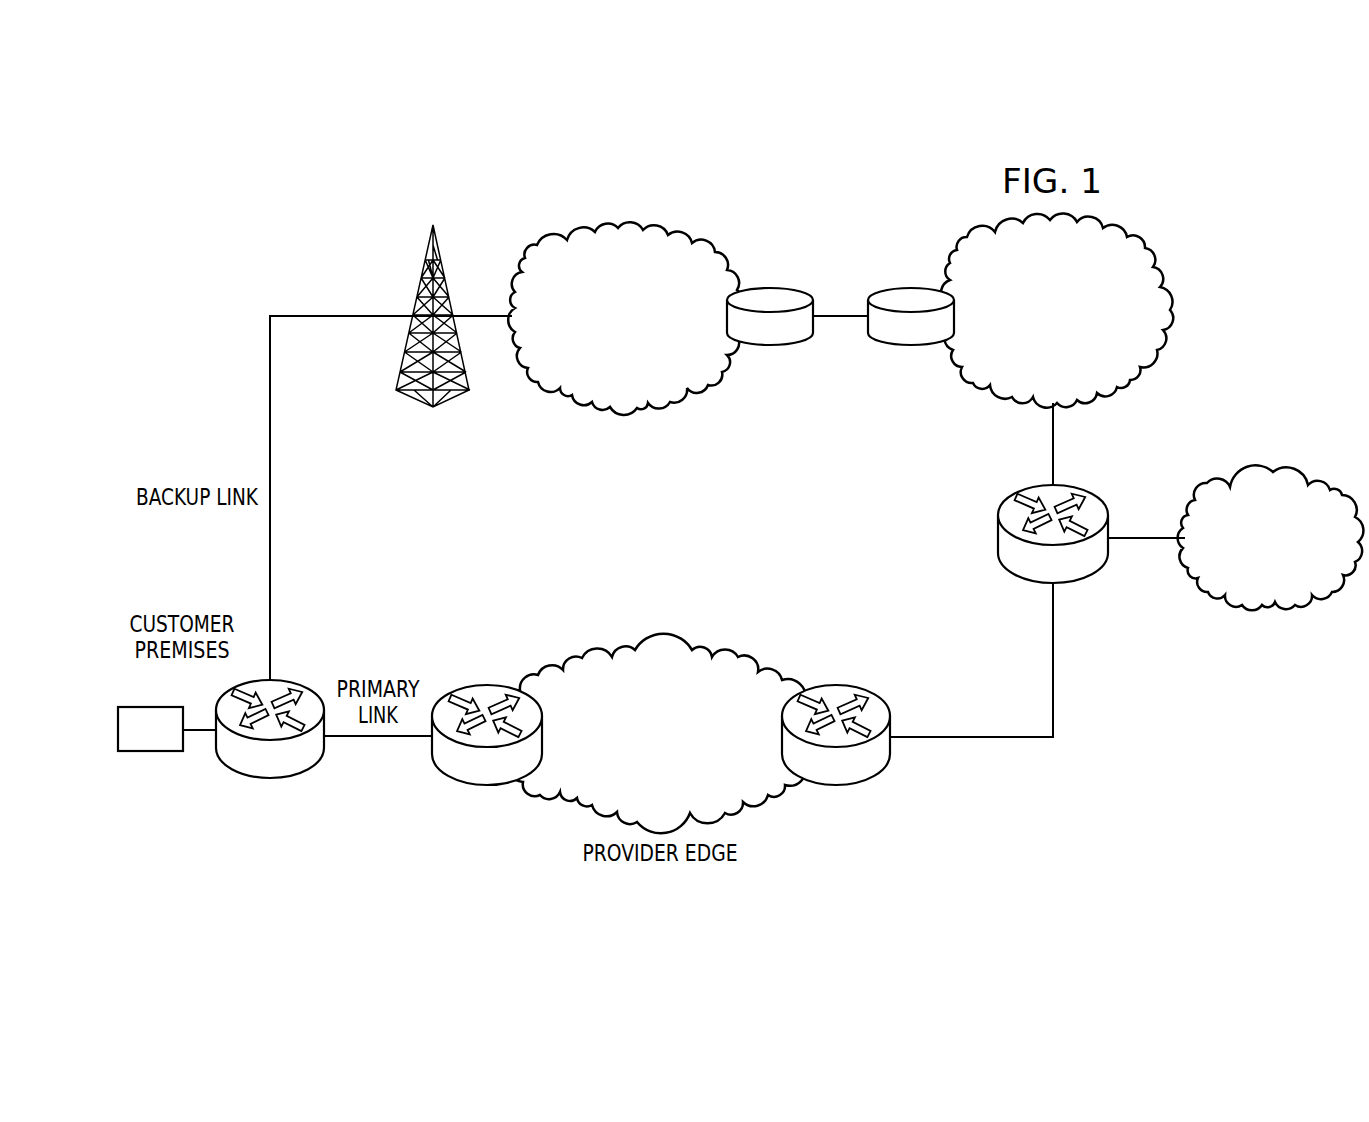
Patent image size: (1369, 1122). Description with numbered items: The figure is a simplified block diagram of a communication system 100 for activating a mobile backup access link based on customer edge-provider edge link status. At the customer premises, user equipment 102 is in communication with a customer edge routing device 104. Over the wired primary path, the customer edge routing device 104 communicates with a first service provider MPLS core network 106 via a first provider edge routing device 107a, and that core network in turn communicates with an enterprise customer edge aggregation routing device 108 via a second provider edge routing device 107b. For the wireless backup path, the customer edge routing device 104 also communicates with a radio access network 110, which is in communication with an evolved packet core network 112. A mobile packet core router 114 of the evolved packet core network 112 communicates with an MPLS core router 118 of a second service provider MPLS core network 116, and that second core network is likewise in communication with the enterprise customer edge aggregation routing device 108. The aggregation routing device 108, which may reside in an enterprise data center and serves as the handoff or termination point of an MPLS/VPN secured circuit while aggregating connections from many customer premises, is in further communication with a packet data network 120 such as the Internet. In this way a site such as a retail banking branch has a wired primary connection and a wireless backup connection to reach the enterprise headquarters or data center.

The communication system 100 is at (320, 264).
The user equipment 102 is at (150, 752).
The customer edge routing device 104 is at (250, 778).
The first service provider MPLS core network 106 is at (641, 790).
The first provider edge routing device 107a is at (487, 786).
The second provider edge routing device 107b is at (838, 786).
The enterprise customer edge aggregation routing device 108 is at (998, 533).
The radio access network 110 is at (450, 397).
The evolved packet core network 112 is at (628, 222).
The mobile packet core router 114 is at (770, 288).
The second service provider MPLS core network 116 is at (1137, 236).
The MPLS core router 118 is at (912, 288).
The packet data network 120 is at (1268, 470).